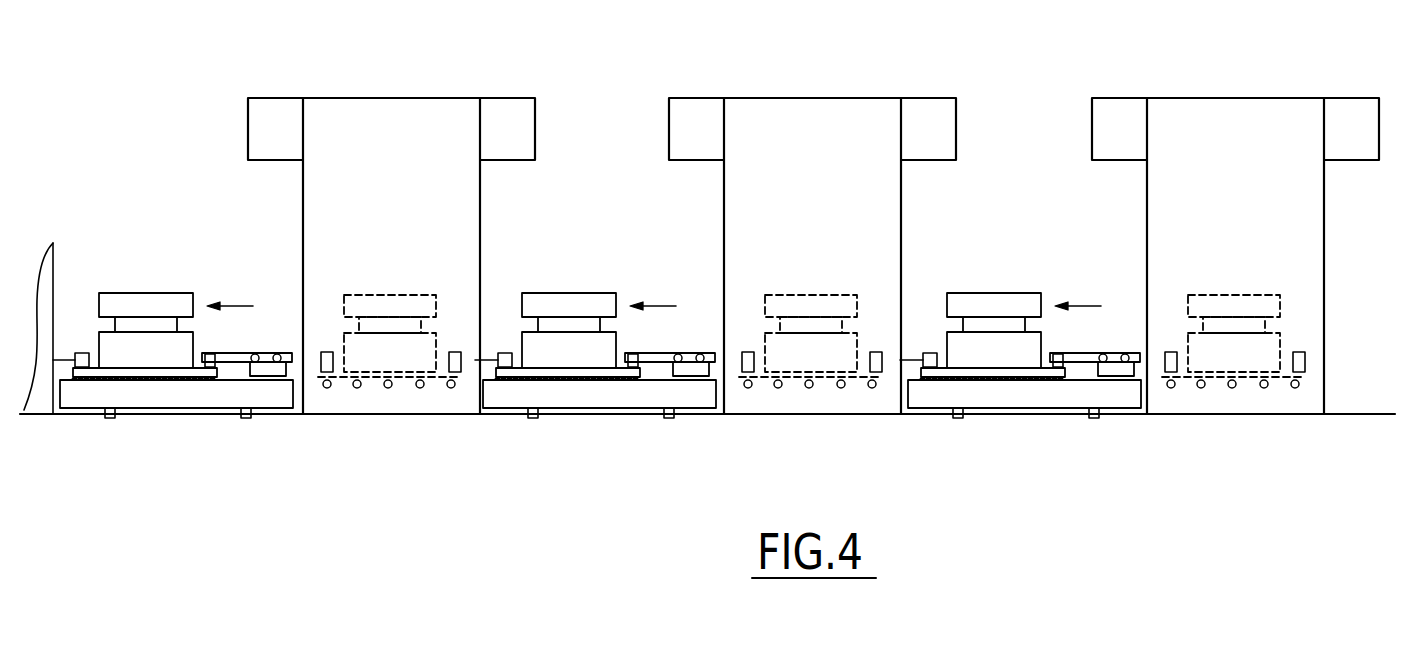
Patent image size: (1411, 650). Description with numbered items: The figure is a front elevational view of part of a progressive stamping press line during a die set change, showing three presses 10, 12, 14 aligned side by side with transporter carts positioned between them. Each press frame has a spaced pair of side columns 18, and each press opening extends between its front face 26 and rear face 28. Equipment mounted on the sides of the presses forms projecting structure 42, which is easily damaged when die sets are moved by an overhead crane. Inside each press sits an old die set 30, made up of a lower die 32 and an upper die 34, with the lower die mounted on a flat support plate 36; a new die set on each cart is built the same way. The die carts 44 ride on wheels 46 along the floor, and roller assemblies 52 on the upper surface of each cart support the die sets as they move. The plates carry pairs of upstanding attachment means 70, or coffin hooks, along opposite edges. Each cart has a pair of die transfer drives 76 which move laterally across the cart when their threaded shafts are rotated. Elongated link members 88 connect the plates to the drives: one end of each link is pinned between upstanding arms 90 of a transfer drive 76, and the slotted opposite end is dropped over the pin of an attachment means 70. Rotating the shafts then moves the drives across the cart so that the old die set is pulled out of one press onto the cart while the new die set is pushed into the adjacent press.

The press 10 is at (1224, 100).
The press 12 is at (804, 100).
The press 14 is at (383, 100).
The side column 18 is at (406, 180).
The front face 26 is at (481, 205).
The rear face 28 is at (302, 193).
The projecting structure 42 is at (283, 97).
The die set 30 is at (380, 294).
The lower die 32 is at (402, 363).
The upper die 34 is at (413, 300).
The support plate 36 is at (430, 392).
The die cart 44 is at (290, 408).
The wheel 46 is at (108, 418).
The roller assembly 52 is at (218, 382).
The attachment means 70 is at (80, 352).
The die transfer drive 76 is at (268, 354).
The link member 88 is at (302, 362).
The arm 90 is at (268, 386).